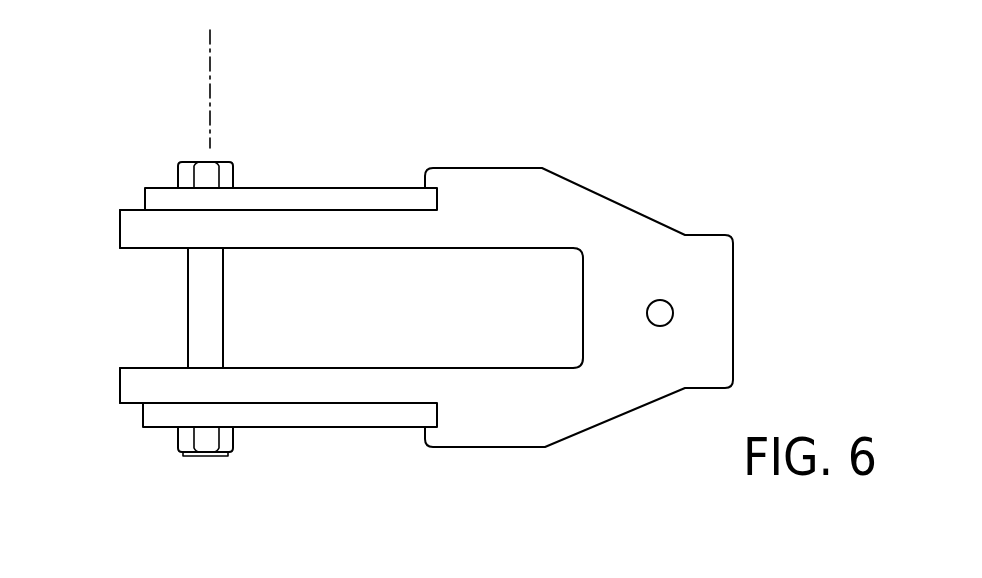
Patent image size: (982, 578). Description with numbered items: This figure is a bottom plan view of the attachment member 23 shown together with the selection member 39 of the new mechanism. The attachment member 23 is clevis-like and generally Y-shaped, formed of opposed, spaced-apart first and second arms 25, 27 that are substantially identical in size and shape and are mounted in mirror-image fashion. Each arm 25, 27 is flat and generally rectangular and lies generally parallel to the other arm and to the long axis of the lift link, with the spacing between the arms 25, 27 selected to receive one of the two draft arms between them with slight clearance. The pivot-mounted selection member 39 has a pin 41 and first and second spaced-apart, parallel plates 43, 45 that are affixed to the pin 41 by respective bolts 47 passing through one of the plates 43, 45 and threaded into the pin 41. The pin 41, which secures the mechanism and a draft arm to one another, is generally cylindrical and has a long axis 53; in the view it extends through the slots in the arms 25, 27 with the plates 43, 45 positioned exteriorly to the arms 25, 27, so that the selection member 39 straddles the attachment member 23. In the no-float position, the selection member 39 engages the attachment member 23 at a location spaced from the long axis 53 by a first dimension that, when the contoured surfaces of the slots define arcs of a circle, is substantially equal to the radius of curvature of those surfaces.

The attachment member 23 is at (593, 425).
The first arm 25 is at (119, 403).
The second arm 27 is at (120, 208).
The selection member 39 is at (132, 281).
The pin 41 is at (223, 312).
The first plate 43 is at (308, 427).
The second plate 45 is at (355, 188).
The bolt 47 is at (223, 160).
The long axis 53 is at (212, 48).